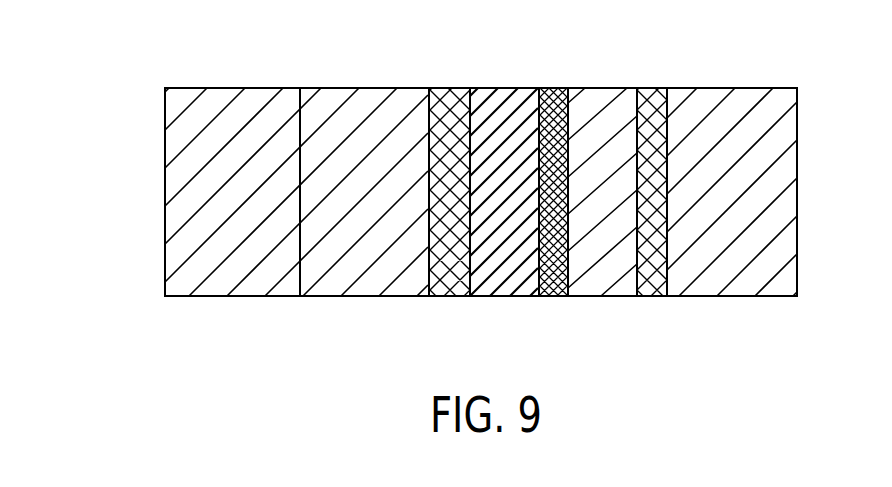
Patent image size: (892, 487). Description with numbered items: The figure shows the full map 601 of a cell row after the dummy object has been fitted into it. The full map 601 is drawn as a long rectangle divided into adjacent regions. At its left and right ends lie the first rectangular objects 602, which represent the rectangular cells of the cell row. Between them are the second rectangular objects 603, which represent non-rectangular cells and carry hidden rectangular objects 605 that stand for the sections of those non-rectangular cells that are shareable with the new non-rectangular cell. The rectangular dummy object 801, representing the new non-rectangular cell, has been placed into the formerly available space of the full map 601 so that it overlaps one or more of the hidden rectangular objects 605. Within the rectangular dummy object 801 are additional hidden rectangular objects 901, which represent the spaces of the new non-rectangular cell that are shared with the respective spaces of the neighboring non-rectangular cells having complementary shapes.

The full map 601 is at (148, 189).
The first rectangular objects 602 is at (278, 296).
The second rectangular objects 603 is at (603, 95).
The hidden rectangular objects 605 is at (457, 296).
The rectangular dummy object 801 is at (502, 88).
The additional hidden rectangular objects 901 is at (553, 88).